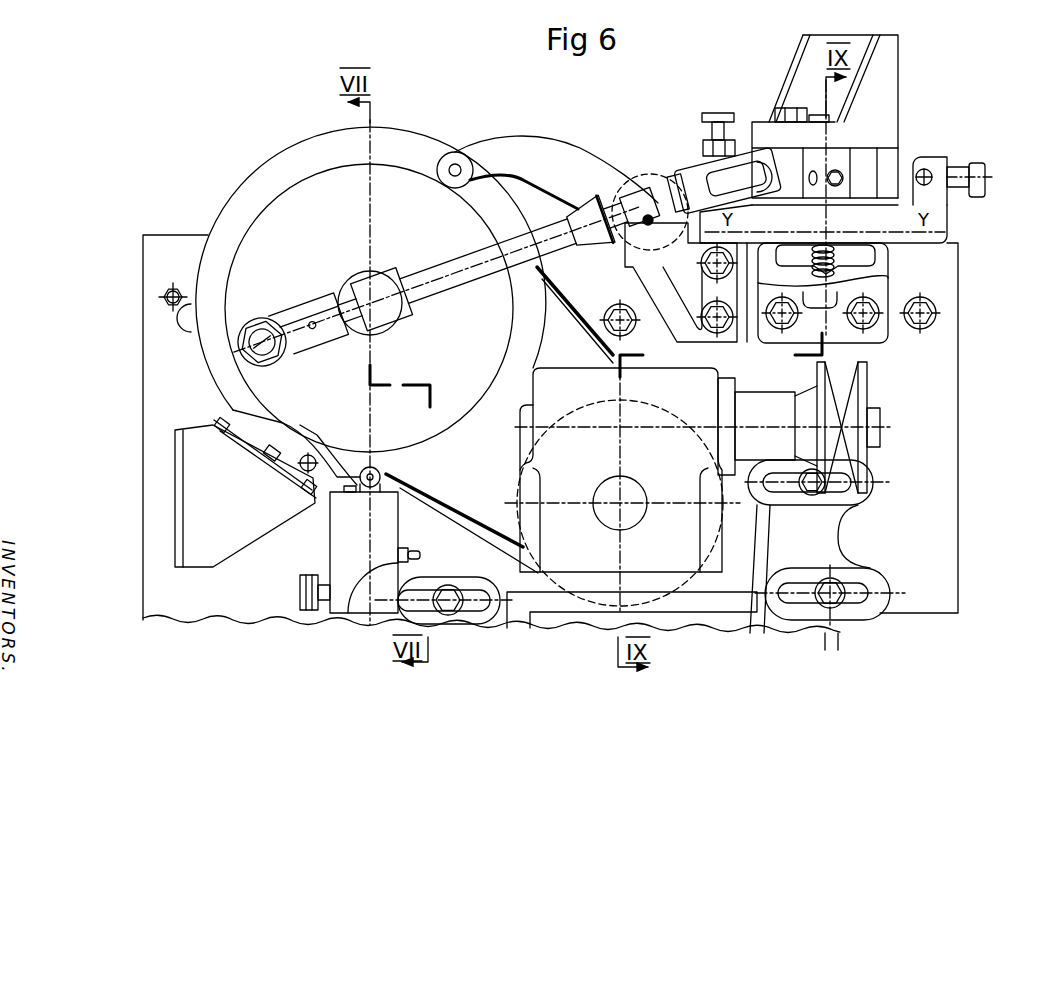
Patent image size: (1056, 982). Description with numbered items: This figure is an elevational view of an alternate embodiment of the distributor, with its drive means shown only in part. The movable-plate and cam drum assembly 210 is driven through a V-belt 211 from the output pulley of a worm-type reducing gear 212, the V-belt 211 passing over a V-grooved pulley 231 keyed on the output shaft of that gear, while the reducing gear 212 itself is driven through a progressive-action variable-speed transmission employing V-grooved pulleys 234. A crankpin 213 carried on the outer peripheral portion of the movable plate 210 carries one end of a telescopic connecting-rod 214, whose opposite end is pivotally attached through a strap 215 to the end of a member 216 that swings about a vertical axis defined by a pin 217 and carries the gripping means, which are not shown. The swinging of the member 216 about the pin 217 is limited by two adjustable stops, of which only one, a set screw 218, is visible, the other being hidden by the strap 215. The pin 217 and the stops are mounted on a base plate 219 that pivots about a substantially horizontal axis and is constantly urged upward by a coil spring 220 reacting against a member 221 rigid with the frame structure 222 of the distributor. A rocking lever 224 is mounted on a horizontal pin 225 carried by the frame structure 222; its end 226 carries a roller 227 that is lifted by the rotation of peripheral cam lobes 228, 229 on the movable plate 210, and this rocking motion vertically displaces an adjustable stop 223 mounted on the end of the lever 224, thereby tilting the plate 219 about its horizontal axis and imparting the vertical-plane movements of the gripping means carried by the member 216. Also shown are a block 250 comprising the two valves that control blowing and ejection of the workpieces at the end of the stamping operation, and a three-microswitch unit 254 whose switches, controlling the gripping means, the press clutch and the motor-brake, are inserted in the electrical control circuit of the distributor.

The movable-plate and cam drum assembly 210 is at (284, 190).
The V-belt 211 is at (448, 507).
The worm-type reducing gear 212 is at (573, 610).
The crankpin 213 is at (262, 343).
The telescopic connecting-rod 214 is at (428, 258).
The strap 215 is at (700, 170).
The member 216 is at (884, 73).
The pin 217 is at (824, 116).
The set screw 218 is at (938, 158).
The base plate 219 is at (937, 204).
The coil spring 220 is at (832, 256).
The member 221 is at (895, 297).
The frame structure 222 is at (904, 370).
The adjustable stop 223 is at (709, 113).
The rocking lever 224 is at (558, 144).
The horizontal pin 225 is at (645, 195).
The end 226 is at (468, 148).
The roller 227 is at (446, 162).
The peripheral cam lobe 228 is at (522, 330).
The peripheral cam lobe 229 is at (232, 215).
The V-grooved pulley 231 is at (720, 532).
The V-grooved pulleys 234 is at (852, 416).
The block 250 is at (347, 543).
The three-microswitch unit 254 is at (210, 517).